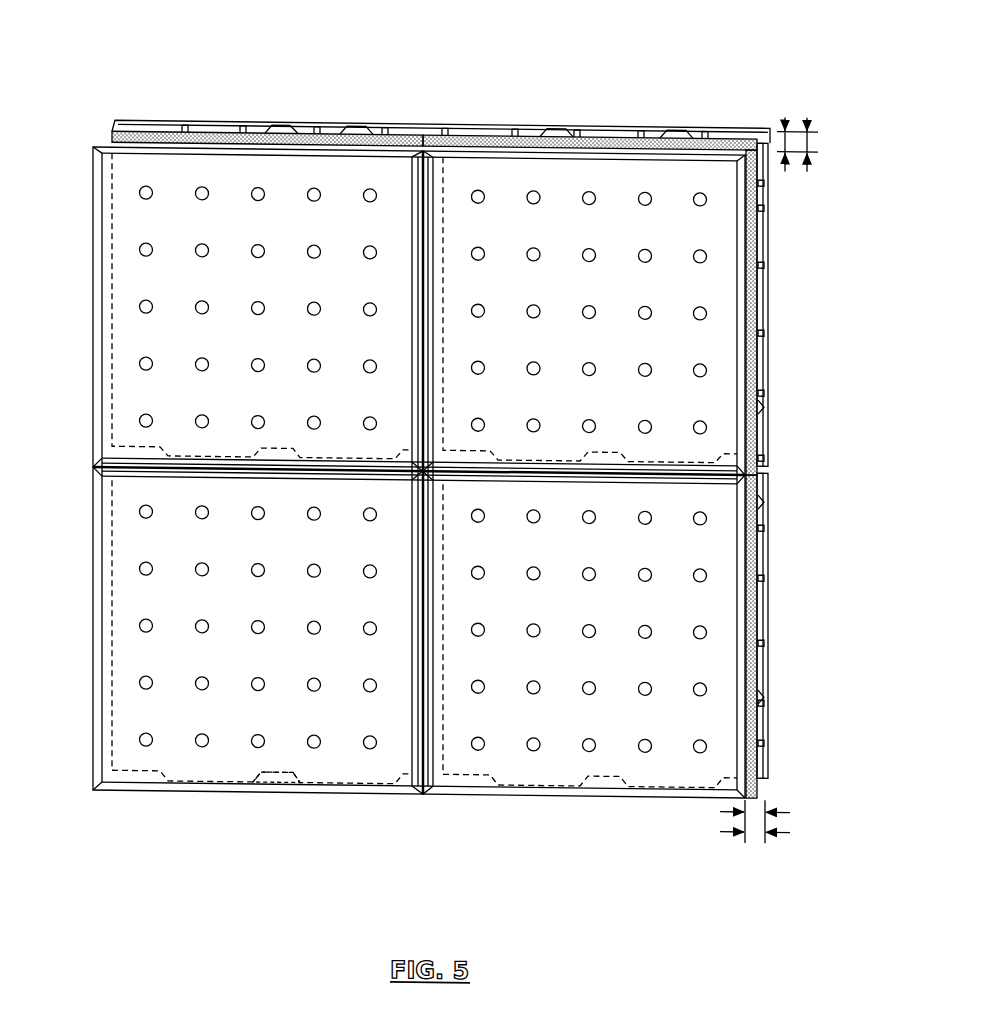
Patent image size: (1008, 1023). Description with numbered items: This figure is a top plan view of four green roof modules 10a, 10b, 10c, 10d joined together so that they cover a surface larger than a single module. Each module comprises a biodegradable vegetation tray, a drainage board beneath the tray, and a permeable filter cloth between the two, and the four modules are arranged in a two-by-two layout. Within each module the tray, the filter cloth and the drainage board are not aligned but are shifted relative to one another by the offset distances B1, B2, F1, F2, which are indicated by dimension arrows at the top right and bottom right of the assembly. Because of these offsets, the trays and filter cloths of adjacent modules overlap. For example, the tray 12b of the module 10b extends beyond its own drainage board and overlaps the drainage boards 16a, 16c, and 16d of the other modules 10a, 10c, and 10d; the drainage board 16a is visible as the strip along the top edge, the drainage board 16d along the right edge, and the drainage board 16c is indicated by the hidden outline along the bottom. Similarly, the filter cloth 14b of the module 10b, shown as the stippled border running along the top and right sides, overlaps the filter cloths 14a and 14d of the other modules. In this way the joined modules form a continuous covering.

The module 10a is at (116, 110).
The module 10b is at (586, 260).
The module 10c is at (86, 477).
The module 10d is at (783, 509).
The tray 12b is at (553, 166).
The filter cloth 14a is at (357, 134).
The filter cloth 14b is at (433, 136).
The filter cloth 14d is at (752, 554).
The drainage board 16a is at (333, 122).
The drainage board 16c is at (266, 784).
The drainage board 16d is at (766, 692).
The offset distance F1 is at (776, 804).
The offset distance F2 is at (785, 111).
The offset distance B1 is at (785, 824).
The offset distance B2 is at (807, 109).